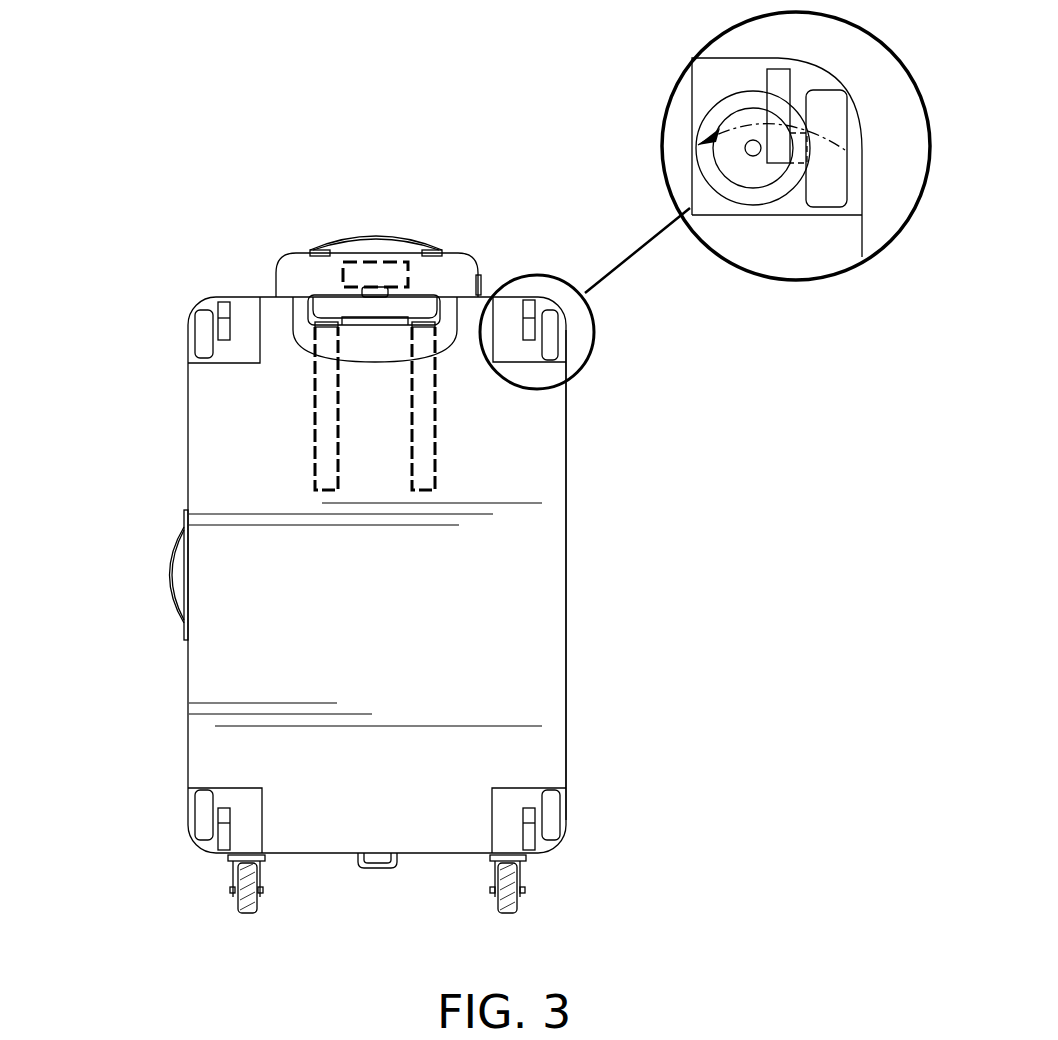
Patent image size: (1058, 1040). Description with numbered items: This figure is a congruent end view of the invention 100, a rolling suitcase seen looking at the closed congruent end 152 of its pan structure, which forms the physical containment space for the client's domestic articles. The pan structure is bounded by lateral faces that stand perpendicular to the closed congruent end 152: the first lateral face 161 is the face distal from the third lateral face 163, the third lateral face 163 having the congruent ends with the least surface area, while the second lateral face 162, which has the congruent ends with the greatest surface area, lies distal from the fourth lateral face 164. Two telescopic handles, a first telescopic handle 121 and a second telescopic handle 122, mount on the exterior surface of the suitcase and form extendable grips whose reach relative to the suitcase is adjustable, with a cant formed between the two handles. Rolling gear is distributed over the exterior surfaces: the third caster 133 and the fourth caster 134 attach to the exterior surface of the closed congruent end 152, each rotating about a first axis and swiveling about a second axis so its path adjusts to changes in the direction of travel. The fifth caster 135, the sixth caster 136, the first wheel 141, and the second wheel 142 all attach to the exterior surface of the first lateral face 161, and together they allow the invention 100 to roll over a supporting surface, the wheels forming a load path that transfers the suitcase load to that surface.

The invention 100 is at (427, 429).
The first telescopic handle 121 is at (458, 272).
The second telescopic handle 122 is at (367, 438).
The third caster 133 is at (503, 913).
The fourth caster 134 is at (240, 913).
The fifth caster 135 is at (553, 360).
The sixth caster 136 is at (205, 353).
The first wheel 141 is at (205, 793).
The second wheel 142 is at (553, 795).
The closed congruent end 152 is at (527, 585).
The first lateral face 161 is at (327, 853).
The second lateral face 162 is at (190, 663).
The third lateral face 163 is at (509, 297).
The fourth lateral face 164 is at (565, 638).